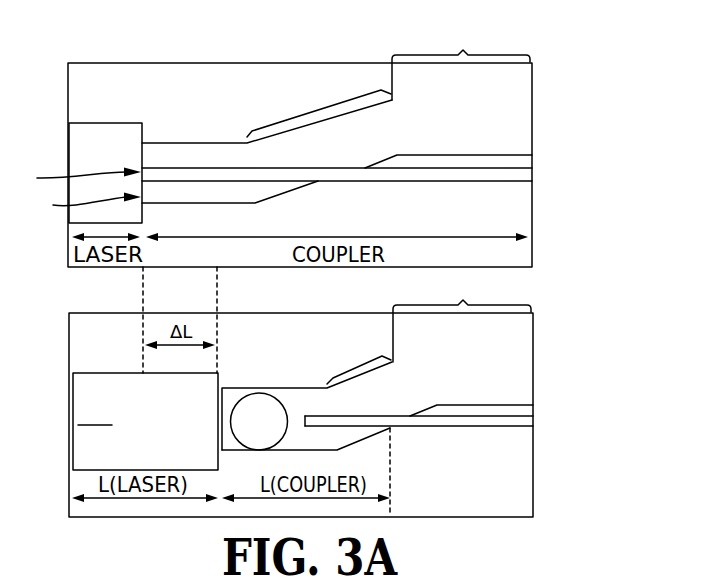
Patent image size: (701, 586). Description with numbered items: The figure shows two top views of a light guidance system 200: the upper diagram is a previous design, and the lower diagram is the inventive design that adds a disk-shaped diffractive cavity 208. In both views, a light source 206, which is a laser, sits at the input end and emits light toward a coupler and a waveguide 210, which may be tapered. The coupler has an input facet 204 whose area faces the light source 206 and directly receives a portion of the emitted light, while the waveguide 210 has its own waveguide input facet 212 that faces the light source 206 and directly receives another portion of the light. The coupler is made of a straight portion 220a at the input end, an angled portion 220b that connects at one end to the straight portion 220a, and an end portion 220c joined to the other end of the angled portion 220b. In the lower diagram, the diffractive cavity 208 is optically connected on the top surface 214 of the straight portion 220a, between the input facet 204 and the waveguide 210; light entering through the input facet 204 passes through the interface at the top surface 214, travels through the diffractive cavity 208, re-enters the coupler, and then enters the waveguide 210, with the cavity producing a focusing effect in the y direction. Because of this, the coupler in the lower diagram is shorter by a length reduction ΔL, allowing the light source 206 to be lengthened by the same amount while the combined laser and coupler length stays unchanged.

The light guidance system 200 is at (526, 37).
The input facet 204 is at (80, 207).
The light source 206 is at (84, 147).
The diffractive cavity 208 is at (260, 438).
The waveguide 210 is at (518, 177).
The waveguide input facet 212 is at (72, 180).
The top surface of straight portion 214 is at (232, 314).
The straight portion 220a is at (242, 137).
The angled portion 220b is at (318, 106).
The end portion 220c is at (461, 192).